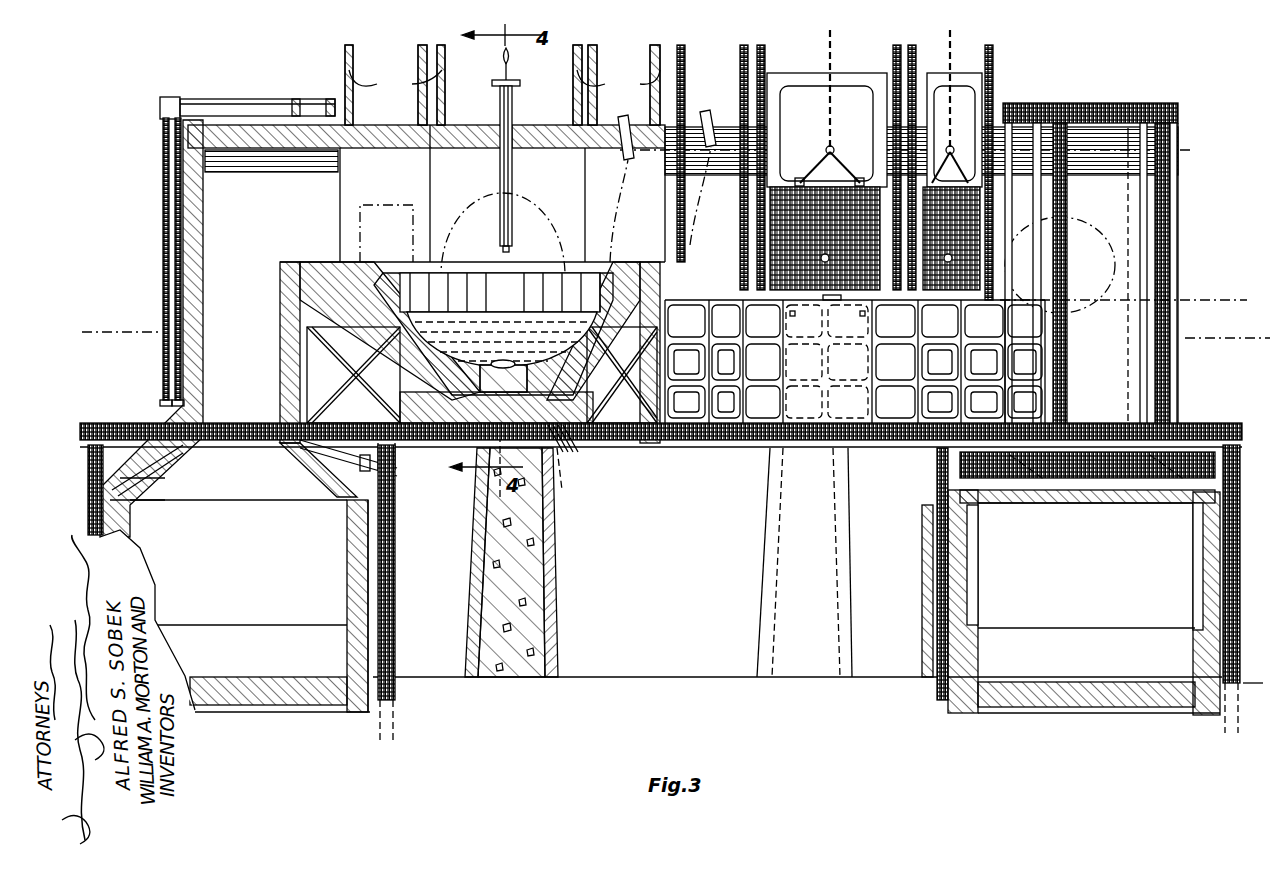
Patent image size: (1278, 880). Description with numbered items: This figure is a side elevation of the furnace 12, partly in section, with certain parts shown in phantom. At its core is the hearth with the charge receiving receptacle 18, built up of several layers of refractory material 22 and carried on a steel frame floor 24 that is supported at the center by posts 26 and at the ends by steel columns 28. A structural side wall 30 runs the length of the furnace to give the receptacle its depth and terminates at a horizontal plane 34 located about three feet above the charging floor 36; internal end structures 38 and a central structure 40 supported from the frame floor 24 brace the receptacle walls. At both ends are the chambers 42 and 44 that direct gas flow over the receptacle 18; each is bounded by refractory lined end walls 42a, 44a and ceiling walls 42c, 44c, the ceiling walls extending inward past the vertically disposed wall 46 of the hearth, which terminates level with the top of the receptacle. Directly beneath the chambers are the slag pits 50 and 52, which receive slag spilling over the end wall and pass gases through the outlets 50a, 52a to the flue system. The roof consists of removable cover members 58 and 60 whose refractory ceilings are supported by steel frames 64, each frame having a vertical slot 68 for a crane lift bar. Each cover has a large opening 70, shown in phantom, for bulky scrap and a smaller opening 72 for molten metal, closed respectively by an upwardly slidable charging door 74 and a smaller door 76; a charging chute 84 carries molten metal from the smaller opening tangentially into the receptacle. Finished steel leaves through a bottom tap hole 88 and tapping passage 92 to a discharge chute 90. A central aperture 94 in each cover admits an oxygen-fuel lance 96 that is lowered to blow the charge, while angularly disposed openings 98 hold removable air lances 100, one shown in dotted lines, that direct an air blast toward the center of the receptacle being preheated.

The furnace 12 is at (690, 710).
The charge receiving receptacle 18 is at (468, 262).
The refractory material 22 is at (569, 450).
The steel frame floor 24 is at (426, 445).
The posts 26 is at (558, 630).
The steel columns 28 is at (88, 462).
The structural side wall 30 is at (790, 425).
The horizontal plane 34 is at (1123, 318).
The charging floor 36 is at (1227, 326).
The internal end structures 38 is at (388, 450).
The central structure 40 is at (618, 447).
The chamber 42 is at (220, 268).
The end wall 42a is at (178, 222).
The ceiling wall 42c is at (232, 156).
The chamber 44 is at (1149, 246).
The end wall 44a is at (1134, 214).
The ceiling wall 44c is at (1132, 166).
The vertically disposed wall 46 is at (304, 326).
The slag pit 50 is at (220, 565).
The outlet 50a is at (295, 625).
The slag pit 52 is at (1090, 570).
The outlet 52a is at (1015, 628).
The cover member 58 is at (490, 124).
The cover member 60 is at (848, 146).
The steel frames 64 is at (441, 45).
The vertical slot 68 is at (504, 80).
The large opening 70 is at (468, 208).
The smaller opening 72 is at (376, 204).
The charging door 74 is at (838, 232).
The door 76 is at (961, 232).
The molten metal charging chute 84 is at (405, 258).
The bottom tap hole 88 is at (506, 262).
The discharge chute 90 is at (573, 477).
The tapping passage 92 is at (545, 262).
The central aperture 94 is at (512, 118).
The oxygen-fuel lance 96 is at (512, 171).
The angularly disposed openings 98 is at (622, 145).
The air lances 100 is at (629, 165).